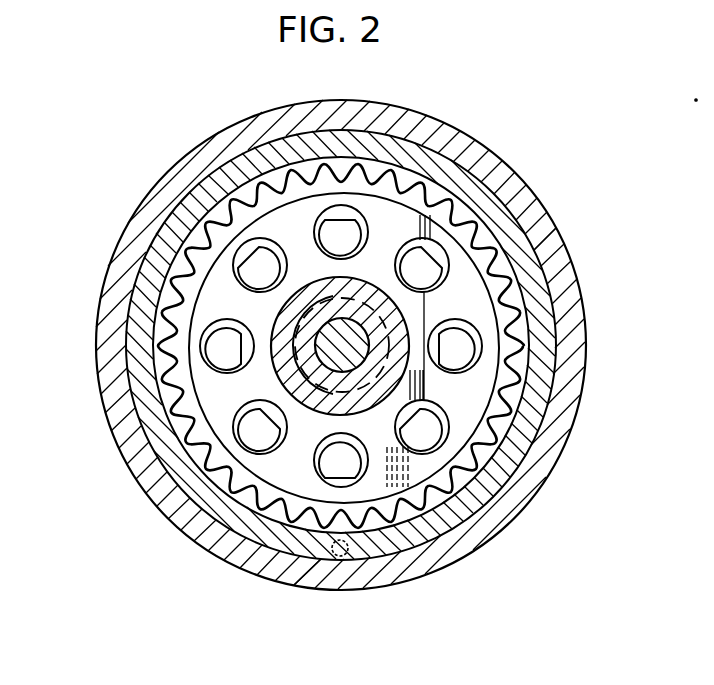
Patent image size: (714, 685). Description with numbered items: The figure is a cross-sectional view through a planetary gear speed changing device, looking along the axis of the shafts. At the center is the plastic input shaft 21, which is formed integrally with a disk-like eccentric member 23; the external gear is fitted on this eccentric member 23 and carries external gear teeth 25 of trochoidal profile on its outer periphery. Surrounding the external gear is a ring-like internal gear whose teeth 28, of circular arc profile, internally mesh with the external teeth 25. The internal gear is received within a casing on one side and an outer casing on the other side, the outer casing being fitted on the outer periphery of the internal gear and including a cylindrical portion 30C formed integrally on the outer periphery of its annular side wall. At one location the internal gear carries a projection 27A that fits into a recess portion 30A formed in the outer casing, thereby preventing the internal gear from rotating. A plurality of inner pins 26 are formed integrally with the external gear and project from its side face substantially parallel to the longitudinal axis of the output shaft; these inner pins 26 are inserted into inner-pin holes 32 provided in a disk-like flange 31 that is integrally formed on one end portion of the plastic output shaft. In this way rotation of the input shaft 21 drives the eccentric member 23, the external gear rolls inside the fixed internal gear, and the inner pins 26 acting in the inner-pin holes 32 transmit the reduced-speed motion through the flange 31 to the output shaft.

The input shaft 21 is at (328, 341).
The eccentric member 23 is at (297, 367).
The external gear teeth 25 is at (557, 253).
The inner pins 26 is at (248, 272).
The projection 27A is at (347, 552).
The teeth 28 is at (480, 222).
The recess portion 30A is at (308, 567).
The cylindrical portion 30C is at (487, 158).
The flange 31 is at (455, 408).
The inner-pin holes 32 is at (193, 228).